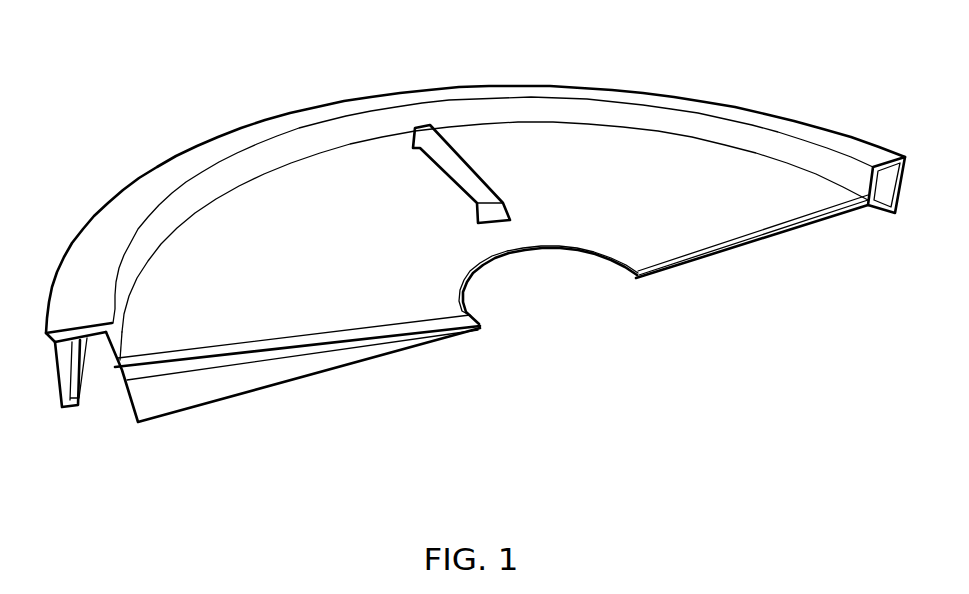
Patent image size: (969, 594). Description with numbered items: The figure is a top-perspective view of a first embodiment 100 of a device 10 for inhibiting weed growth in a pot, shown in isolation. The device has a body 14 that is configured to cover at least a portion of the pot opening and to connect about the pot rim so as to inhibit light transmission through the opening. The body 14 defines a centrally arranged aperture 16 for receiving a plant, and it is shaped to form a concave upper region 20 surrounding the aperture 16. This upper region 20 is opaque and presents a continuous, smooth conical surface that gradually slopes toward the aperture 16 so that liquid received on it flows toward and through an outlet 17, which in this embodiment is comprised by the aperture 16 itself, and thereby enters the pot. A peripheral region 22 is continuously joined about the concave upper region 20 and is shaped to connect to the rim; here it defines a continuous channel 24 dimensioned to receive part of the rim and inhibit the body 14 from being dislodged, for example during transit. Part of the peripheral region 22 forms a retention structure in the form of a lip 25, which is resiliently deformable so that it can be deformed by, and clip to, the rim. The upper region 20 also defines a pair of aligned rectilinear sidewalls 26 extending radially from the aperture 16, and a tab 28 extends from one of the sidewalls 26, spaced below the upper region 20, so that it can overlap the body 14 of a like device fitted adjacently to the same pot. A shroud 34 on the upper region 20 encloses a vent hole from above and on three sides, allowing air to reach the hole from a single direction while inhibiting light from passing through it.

The device for inhibiting weed growth 10 is at (97, 117).
The first embodiment of the device 100 is at (852, 101).
The body 14 is at (678, 233).
The centrally arranged aperture 16 is at (518, 295).
The outlet 17 is at (560, 253).
The concave upper region 20 is at (647, 172).
The peripheral region 22 is at (667, 98).
The continuous channel 24 is at (82, 350).
The lip 25 is at (63, 407).
The rectilinear sidewalls 26 is at (800, 227).
The tab 28 is at (275, 387).
The shroud 34 is at (457, 173).